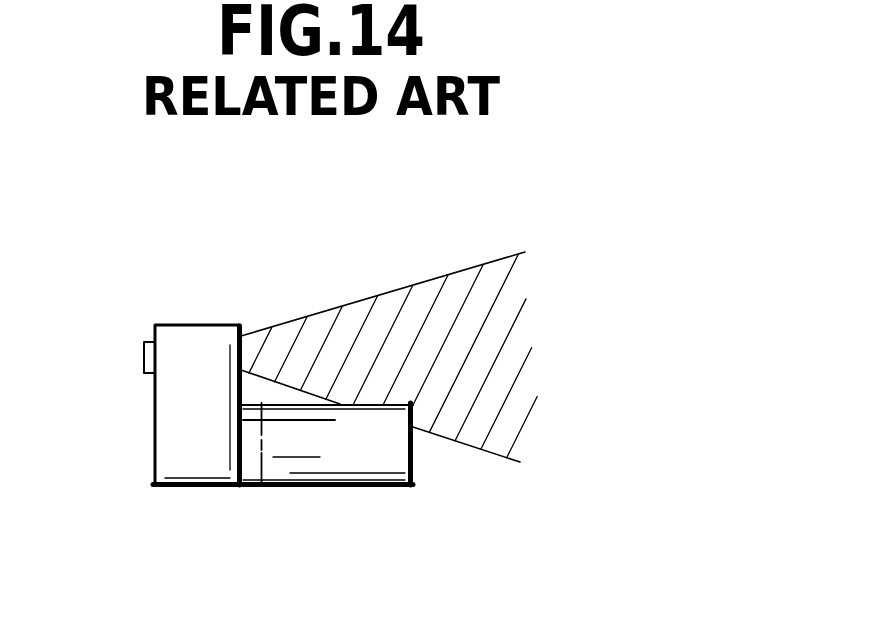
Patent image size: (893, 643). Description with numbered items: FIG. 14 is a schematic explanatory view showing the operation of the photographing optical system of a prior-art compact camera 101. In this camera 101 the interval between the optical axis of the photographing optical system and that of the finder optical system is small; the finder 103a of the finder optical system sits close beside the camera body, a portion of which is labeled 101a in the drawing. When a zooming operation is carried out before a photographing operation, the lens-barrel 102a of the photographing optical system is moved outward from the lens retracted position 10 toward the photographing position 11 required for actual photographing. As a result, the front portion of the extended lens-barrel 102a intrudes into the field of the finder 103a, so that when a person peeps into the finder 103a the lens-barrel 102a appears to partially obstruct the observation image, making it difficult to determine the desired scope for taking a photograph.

The compact camera 101 is at (131, 459).
The lens holder body 101a is at (199, 460).
The lens-barrel 102a is at (350, 462).
The finder 103a is at (145, 358).
The lens retracted position 10 is at (262, 462).
The photographing position 11 is at (415, 457).